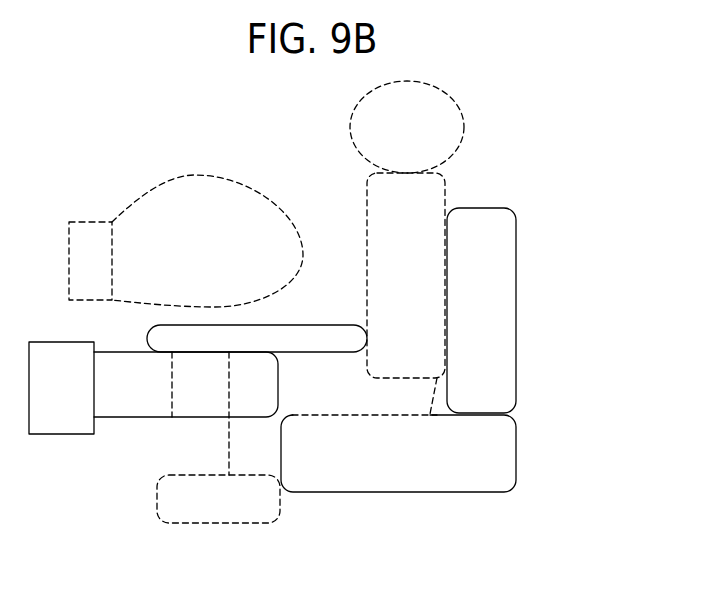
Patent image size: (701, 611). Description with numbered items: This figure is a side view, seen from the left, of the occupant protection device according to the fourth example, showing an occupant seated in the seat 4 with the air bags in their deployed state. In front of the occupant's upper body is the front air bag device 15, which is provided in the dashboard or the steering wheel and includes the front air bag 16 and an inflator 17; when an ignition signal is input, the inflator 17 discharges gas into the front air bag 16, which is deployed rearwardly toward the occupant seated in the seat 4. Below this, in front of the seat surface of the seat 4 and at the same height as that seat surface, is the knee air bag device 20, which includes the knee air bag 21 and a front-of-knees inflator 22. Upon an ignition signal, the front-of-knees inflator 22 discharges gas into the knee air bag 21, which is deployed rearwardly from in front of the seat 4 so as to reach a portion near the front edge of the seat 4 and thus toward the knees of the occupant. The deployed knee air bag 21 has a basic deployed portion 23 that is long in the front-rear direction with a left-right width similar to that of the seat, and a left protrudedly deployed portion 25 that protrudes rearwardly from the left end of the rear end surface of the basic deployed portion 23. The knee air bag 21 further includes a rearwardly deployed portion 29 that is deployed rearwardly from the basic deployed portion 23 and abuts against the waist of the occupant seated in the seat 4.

The seat 4 is at (487, 448).
The front air bag device 15 is at (186, 193).
The front air bag 16 is at (207, 217).
The inflator 17 is at (93, 222).
The knee air bag device 20 is at (295, 466).
The knee air bag 21 is at (187, 479).
The front-of-knees inflator 22 is at (50, 400).
The basic deployed portion 23 is at (125, 397).
The left protrudedly deployed portion 25 is at (226, 396).
The rearwardly deployed portion 29 is at (332, 338).